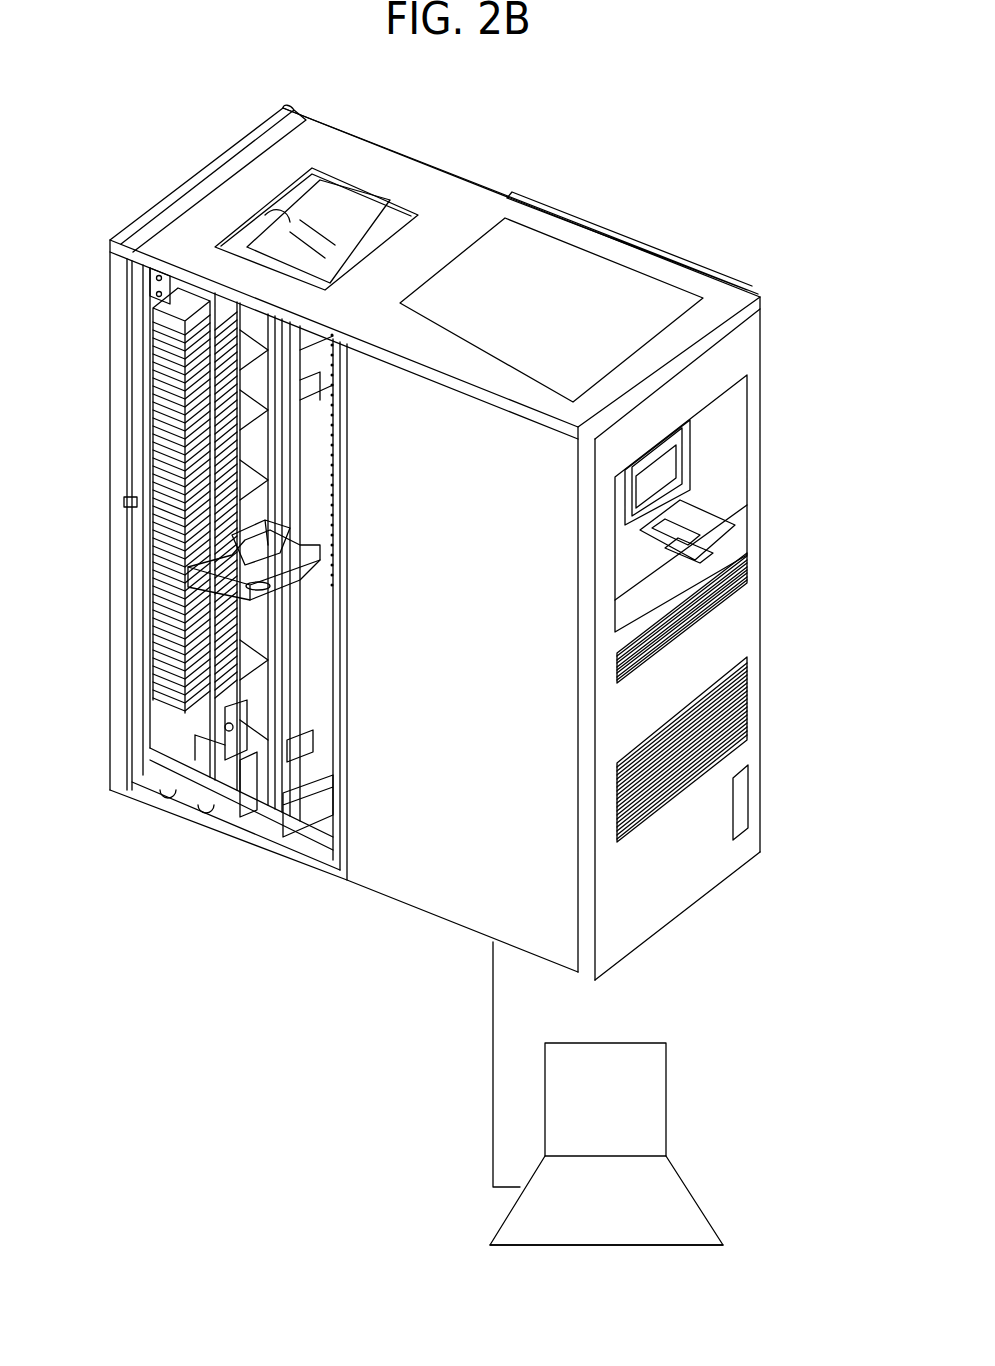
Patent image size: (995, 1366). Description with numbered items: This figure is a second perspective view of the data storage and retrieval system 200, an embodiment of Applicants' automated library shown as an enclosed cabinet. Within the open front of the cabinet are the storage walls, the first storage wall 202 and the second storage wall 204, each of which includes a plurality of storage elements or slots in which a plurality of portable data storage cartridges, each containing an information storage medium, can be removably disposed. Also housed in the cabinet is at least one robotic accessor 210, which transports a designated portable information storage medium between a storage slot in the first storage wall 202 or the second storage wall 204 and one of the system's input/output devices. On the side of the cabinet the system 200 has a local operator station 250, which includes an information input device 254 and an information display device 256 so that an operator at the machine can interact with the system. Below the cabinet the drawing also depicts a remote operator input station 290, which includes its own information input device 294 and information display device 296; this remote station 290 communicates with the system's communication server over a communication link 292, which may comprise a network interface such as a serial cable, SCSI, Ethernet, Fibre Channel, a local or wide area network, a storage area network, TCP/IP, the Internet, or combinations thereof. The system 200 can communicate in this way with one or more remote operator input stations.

The data storage and retrieval system 200 is at (551, 178).
The first storage wall 202 is at (312, 479).
The second storage wall 204 is at (180, 306).
The robotic accessor 210 is at (272, 742).
The local operator station 250 is at (733, 409).
The information input device 254 is at (663, 558).
The information display device 256 is at (672, 474).
The remote operator input station 290 is at (505, 1218).
The communication link 292 is at (493, 1080).
The information input device 294 is at (590, 1227).
The information display device 296 is at (652, 1093).